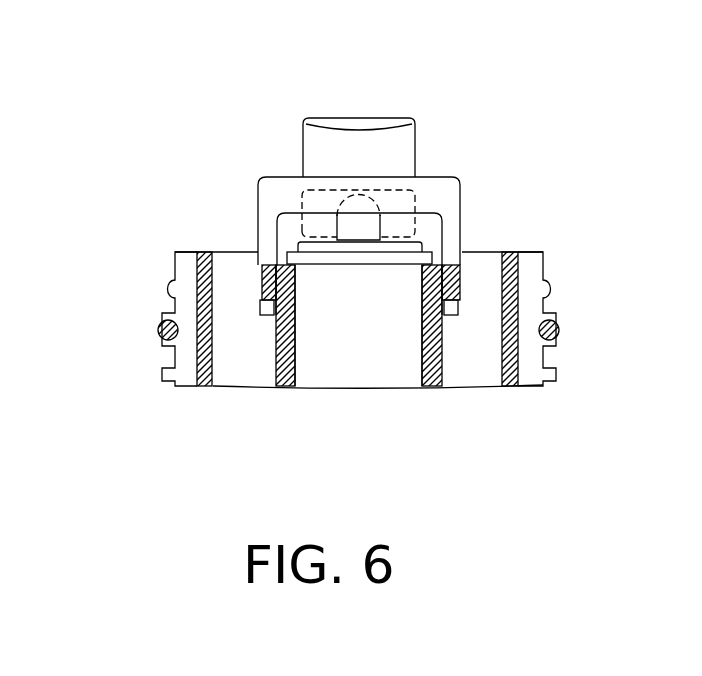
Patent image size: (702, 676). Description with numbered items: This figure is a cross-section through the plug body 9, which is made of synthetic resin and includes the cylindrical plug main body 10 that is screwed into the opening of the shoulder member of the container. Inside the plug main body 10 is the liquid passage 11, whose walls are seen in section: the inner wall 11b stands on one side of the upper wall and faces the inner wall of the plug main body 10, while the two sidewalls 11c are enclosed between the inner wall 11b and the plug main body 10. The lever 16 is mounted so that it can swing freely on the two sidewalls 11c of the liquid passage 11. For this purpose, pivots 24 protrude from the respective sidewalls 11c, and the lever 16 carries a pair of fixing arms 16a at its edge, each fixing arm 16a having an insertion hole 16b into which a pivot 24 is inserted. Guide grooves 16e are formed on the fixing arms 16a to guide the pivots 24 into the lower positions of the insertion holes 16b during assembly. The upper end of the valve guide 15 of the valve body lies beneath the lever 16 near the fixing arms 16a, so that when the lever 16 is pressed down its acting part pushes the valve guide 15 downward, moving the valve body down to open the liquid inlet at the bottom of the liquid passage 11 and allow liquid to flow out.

The plug body 9 is at (335, 70).
The plug main body 10 is at (553, 282).
The liquid passage 11 is at (357, 372).
The inner wall 11b is at (382, 353).
The sidewall 11c is at (284, 384).
The valve guide 15 is at (370, 228).
The lever 16 is at (414, 108).
The fixing arm 16a is at (452, 256).
The insertion hole 16b is at (262, 272).
The guide groove 16e is at (264, 315).
The pivot 24 is at (262, 298).